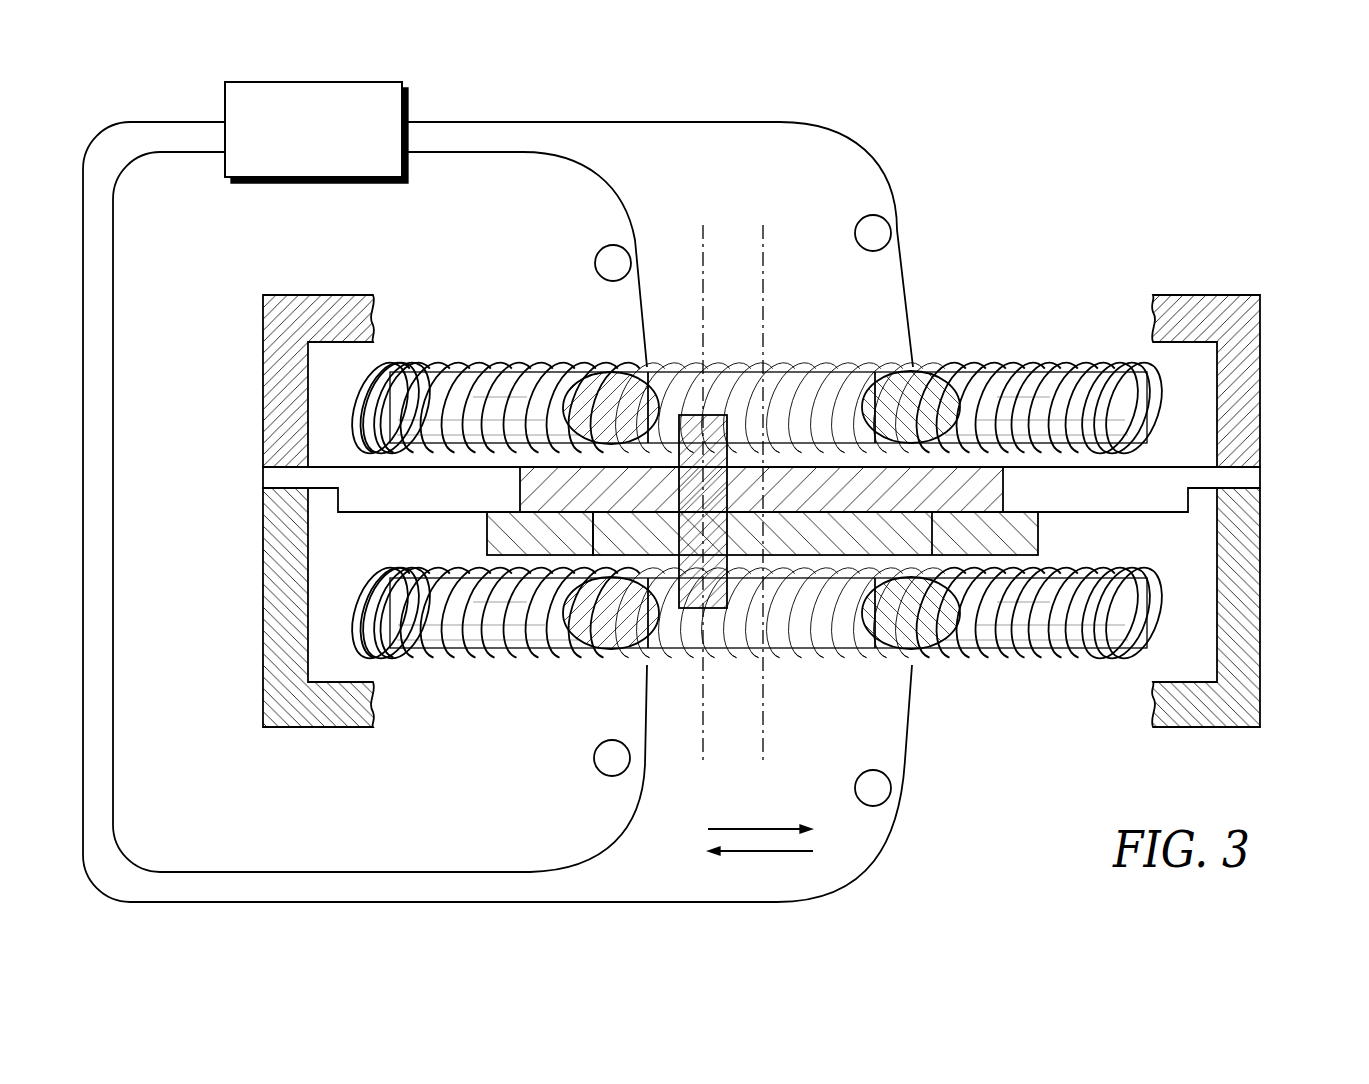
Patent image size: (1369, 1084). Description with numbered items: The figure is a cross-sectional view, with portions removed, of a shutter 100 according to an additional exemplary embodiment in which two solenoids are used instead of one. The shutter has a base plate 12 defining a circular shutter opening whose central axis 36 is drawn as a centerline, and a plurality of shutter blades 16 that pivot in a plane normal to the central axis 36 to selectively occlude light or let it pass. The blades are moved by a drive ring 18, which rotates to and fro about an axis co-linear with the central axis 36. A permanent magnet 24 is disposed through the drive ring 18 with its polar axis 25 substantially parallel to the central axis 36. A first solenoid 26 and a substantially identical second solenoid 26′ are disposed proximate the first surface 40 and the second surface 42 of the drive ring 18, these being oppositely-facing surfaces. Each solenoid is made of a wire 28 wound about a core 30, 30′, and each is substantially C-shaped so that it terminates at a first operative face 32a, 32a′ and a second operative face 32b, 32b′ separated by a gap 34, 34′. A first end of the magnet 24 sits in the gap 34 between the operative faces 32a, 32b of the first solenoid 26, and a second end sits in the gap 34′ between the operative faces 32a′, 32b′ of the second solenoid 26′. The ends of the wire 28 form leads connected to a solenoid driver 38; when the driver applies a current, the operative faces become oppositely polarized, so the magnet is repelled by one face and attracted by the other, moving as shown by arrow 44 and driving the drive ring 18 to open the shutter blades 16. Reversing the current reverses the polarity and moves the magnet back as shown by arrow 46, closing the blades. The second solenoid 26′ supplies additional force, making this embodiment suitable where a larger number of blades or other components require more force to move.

The shutter 100 is at (1166, 207).
The base plate 12 is at (1262, 370).
The shutter blades 16 is at (1040, 537).
The drive ring 18 is at (1005, 494).
The permanent magnet 24 is at (720, 612).
The polar axis 25 is at (703, 225).
The first solenoid 26 is at (1052, 352).
The second solenoid 26′ is at (495, 692).
The wire 28 is at (623, 203).
The core 30 is at (458, 363).
The core 30′ is at (458, 665).
The first operative face 32a is at (662, 405).
The second operative face 32b is at (868, 395).
The first operative face 32a′ is at (677, 640).
The second operative face 32b′ is at (862, 658).
The gap 34 is at (795, 355).
The gap 34′ is at (797, 672).
The central axis 36 is at (763, 225).
The solenoid driver 38 is at (299, 162).
The first surface 40 is at (970, 466).
The second surface 42 is at (558, 514).
The arrow 44 is at (781, 829).
The arrow 46 is at (745, 855).